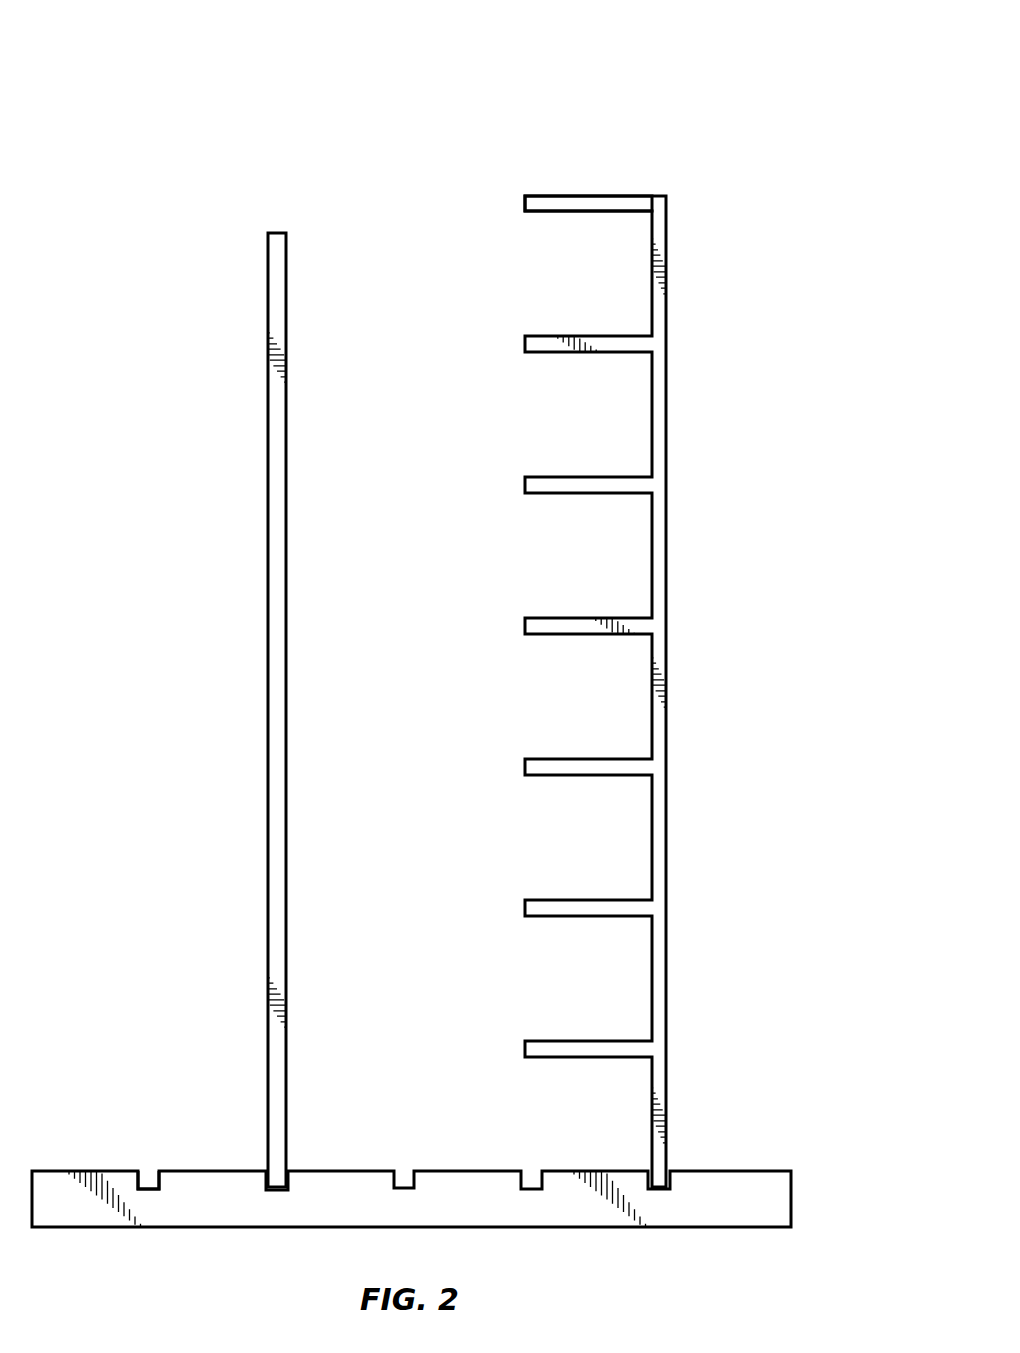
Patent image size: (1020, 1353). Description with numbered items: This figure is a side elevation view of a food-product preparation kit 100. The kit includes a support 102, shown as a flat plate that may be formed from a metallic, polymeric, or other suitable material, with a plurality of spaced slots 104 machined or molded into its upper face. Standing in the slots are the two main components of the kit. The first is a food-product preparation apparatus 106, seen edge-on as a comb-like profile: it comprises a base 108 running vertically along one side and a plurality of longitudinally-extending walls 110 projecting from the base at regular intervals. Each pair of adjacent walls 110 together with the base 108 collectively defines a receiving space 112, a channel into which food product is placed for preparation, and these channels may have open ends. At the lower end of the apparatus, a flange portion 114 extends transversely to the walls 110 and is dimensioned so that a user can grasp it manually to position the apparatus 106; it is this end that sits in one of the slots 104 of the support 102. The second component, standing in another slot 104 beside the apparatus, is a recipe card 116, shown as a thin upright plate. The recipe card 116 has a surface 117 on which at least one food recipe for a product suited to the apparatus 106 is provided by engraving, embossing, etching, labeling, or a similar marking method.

The food-product preparation kit 100 is at (684, 72).
The support 102 is at (791, 1202).
The slots 104 is at (147, 1162).
The food-product preparation apparatus 106 is at (683, 190).
The base 108 is at (655, 238).
The longitudinally-extending walls 110 is at (570, 200).
The receiving spaces 112 is at (560, 270).
The flange portion 114 is at (659, 1148).
The recipe card 116 is at (282, 226).
The surface 117 is at (285, 373).